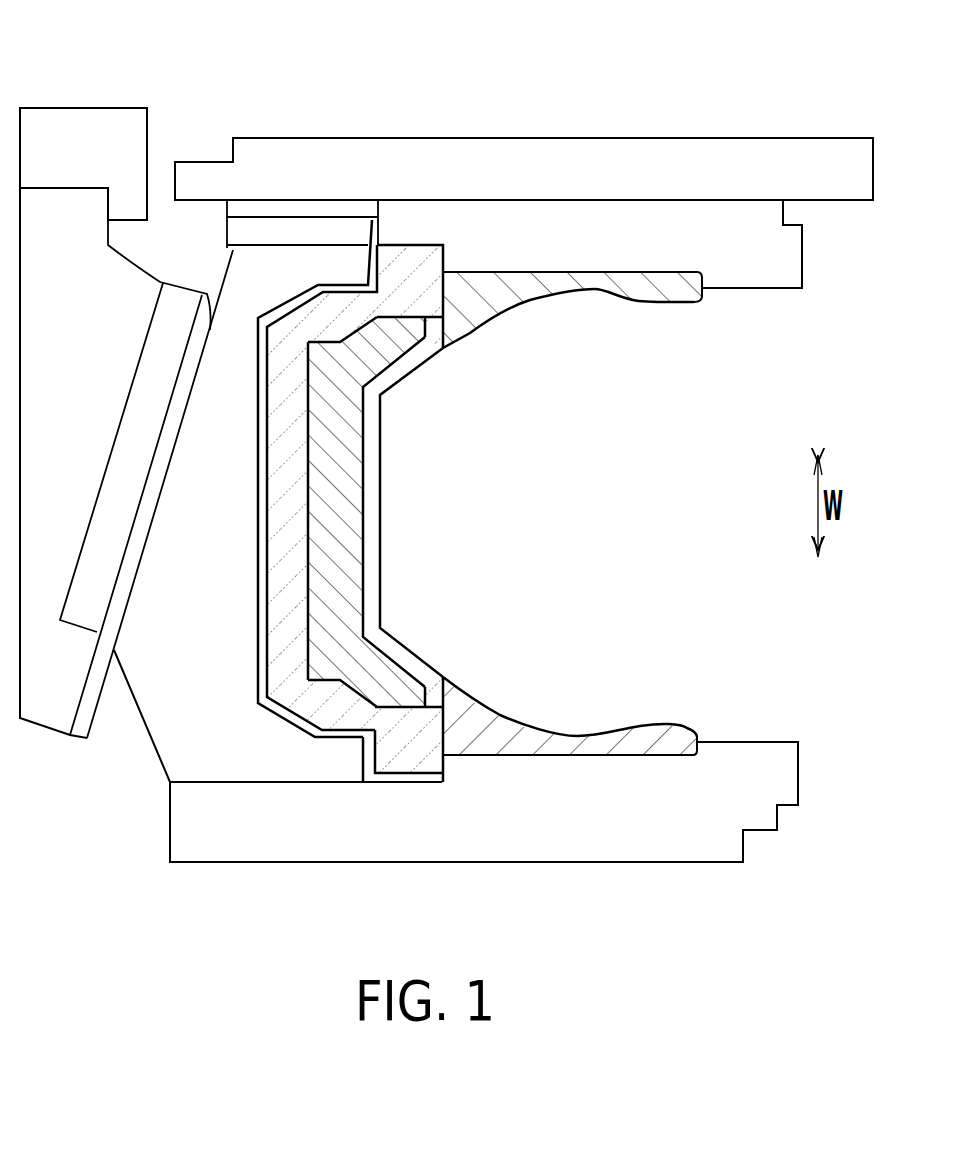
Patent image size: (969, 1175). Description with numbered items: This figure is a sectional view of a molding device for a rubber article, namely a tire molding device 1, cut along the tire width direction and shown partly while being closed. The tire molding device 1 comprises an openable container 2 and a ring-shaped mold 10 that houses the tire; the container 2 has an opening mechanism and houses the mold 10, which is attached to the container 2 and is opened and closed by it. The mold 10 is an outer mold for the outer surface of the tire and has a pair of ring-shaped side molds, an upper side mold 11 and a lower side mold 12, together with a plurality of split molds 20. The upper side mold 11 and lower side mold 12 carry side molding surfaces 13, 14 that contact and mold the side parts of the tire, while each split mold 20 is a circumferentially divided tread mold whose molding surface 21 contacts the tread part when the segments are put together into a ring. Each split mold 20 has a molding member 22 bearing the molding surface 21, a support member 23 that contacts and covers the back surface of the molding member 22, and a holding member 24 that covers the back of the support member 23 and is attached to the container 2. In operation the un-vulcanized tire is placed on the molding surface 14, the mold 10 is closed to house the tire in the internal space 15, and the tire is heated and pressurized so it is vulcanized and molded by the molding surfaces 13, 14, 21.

The tire molding device 1 is at (639, 133).
The container 2 is at (247, 134).
The mold 10 is at (528, 423).
The upper side mold 11 is at (601, 293).
The lower side mold 12 is at (603, 733).
The molding surface 13 is at (555, 299).
The molding surface 14 is at (567, 733).
The internal space 15 is at (607, 460).
The split mold 20 is at (384, 478).
The molding surface 21 is at (378, 445).
The molding member 22 is at (372, 493).
The support member 23 is at (340, 535).
The holding member 24 is at (295, 582).